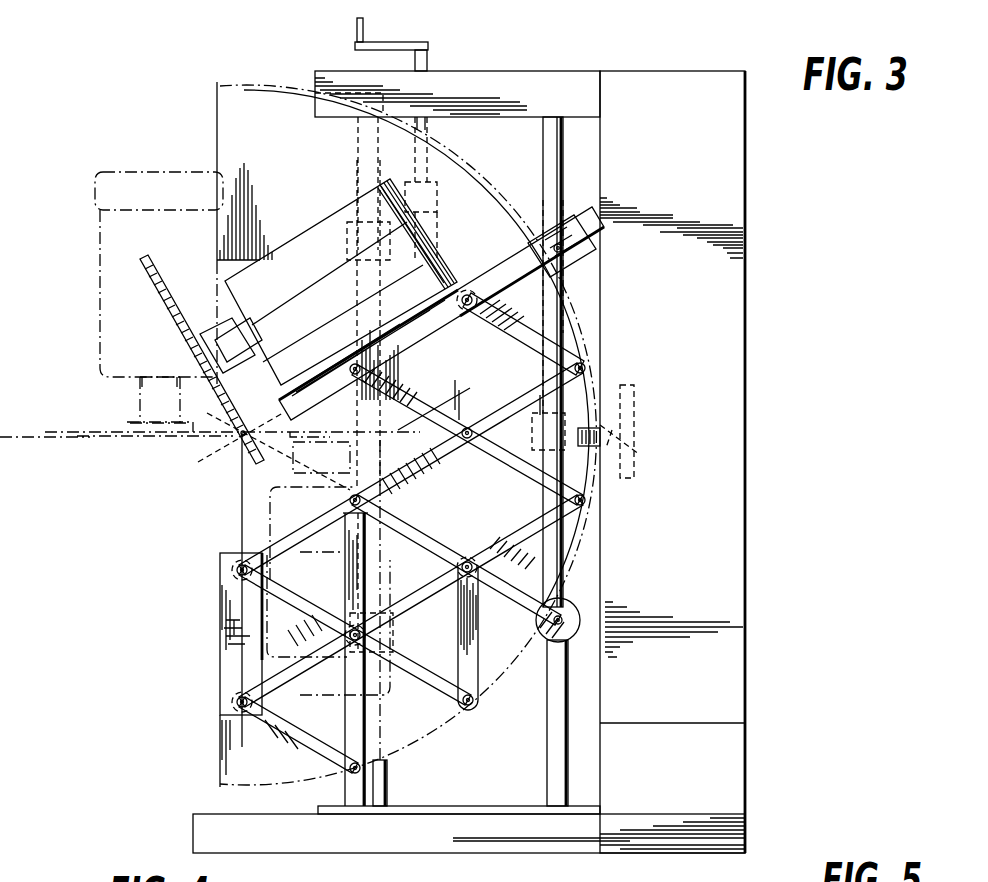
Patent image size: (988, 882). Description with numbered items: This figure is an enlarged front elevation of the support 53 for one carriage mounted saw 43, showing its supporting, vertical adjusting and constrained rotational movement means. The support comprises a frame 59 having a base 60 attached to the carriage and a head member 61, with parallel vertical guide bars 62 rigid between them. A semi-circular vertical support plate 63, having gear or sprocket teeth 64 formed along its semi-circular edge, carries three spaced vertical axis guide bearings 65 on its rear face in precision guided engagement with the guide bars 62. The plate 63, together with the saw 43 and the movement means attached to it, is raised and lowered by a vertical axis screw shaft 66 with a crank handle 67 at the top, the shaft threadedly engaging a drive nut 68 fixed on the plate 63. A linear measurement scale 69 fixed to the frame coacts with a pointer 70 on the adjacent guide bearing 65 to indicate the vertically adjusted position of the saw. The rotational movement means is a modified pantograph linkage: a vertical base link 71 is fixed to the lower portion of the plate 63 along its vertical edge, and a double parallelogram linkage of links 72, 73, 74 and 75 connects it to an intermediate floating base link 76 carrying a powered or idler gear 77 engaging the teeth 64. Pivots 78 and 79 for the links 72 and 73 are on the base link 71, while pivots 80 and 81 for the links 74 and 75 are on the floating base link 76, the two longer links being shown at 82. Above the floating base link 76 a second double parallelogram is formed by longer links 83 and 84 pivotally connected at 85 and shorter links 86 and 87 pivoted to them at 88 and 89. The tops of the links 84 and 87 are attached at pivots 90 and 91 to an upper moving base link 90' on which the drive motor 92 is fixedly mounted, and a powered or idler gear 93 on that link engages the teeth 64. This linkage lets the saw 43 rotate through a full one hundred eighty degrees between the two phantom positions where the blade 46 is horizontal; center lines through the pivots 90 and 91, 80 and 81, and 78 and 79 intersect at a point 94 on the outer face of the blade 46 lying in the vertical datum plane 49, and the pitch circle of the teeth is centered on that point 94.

The saw 43 is at (303, 250).
The saw blade 46 is at (167, 305).
The vertical datum plane 49 is at (240, 494).
The support 53 is at (710, 226).
The frame 59 is at (725, 700).
The base 60 is at (452, 828).
The head member 61 is at (508, 78).
The vertical guide bars 62 is at (553, 745).
The semi-circular vertical support plate 63 is at (480, 195).
The gear or sprocket teeth 64 is at (510, 660).
The vertical axis guide bearings 65 is at (355, 222).
The vertical axis screw shaft 66 is at (430, 122).
The crank handle 67 is at (385, 46).
The drive nut 68 is at (438, 212).
The linear measurement scale 69 is at (634, 412).
The pointer 70 is at (640, 455).
The vertical base link 71 is at (232, 658).
The link 72 is at (298, 744).
The link 73 is at (310, 612).
The link 74 is at (355, 715).
The link 75 is at (462, 625).
The intermediate floating base link 76 is at (432, 535).
The powered or idler gear 77 is at (578, 605).
The pivot 78 is at (232, 568).
The pivot 79 is at (232, 700).
The pivot 80 is at (340, 505).
The pivot 81 is at (470, 556).
The lower double parallelogram linkage 82 is at (348, 660).
The longer link 83 is at (500, 412).
The longer link 84 is at (590, 498).
The pivot 85 is at (468, 428).
The shorter link 86 is at (595, 540).
The shorter link 87 is at (578, 308).
The pivot 88 is at (590, 500).
The pivot 89 is at (600, 360).
The pivot 90 is at (336, 352).
The upper moving base link 90' is at (441, 313).
The pivot 91 is at (472, 294).
The drive motor 92 is at (100, 272).
The powered or idler gear 93 is at (578, 266).
The point 94 is at (238, 435).